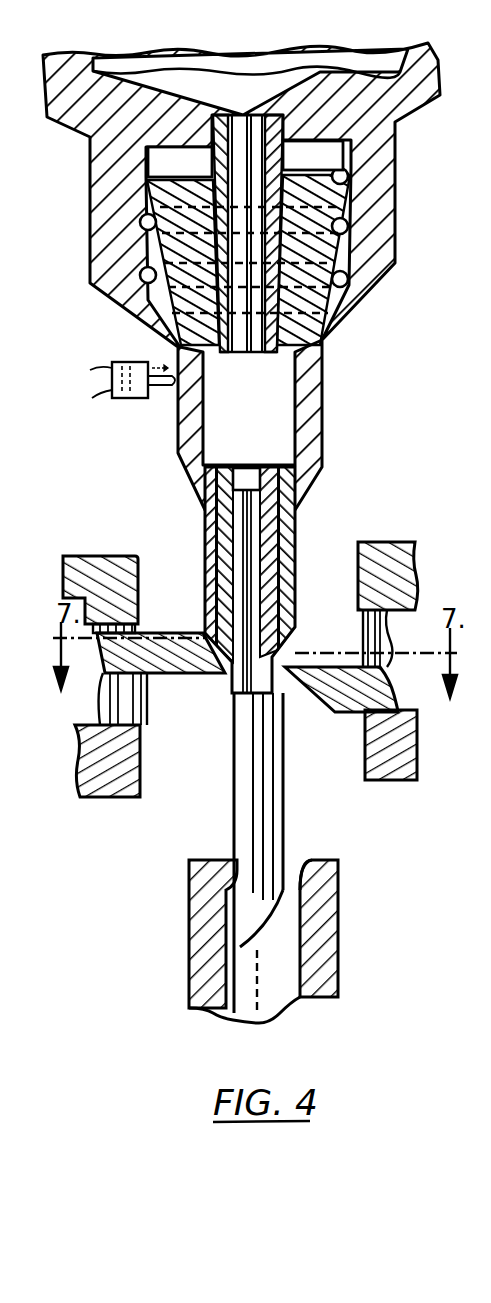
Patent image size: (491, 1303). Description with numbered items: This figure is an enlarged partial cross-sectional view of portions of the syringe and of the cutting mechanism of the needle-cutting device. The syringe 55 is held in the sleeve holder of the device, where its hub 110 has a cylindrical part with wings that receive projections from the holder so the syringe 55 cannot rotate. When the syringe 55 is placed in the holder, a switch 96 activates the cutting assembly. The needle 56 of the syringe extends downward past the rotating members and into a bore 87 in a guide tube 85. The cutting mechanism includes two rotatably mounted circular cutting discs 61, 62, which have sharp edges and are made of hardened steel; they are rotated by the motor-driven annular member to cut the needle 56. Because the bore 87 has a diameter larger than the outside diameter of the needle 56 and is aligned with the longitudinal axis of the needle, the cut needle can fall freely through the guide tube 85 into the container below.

The syringe 55 is at (178, 450).
The needle 56 is at (248, 793).
The circular cutting disc 61 is at (180, 675).
The circular cutting disc 62 is at (313, 693).
The guide tube 85 is at (317, 937).
The bore 87 is at (293, 862).
The switch 96 is at (122, 362).
The hub 110 is at (300, 597).